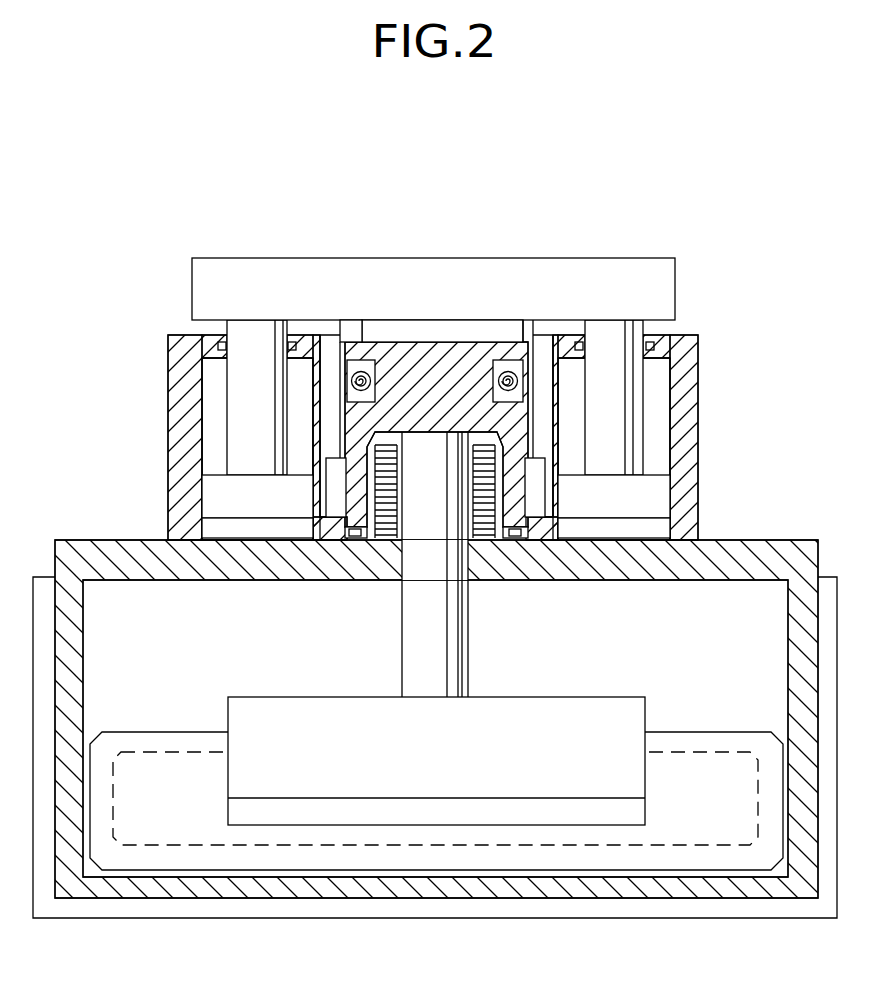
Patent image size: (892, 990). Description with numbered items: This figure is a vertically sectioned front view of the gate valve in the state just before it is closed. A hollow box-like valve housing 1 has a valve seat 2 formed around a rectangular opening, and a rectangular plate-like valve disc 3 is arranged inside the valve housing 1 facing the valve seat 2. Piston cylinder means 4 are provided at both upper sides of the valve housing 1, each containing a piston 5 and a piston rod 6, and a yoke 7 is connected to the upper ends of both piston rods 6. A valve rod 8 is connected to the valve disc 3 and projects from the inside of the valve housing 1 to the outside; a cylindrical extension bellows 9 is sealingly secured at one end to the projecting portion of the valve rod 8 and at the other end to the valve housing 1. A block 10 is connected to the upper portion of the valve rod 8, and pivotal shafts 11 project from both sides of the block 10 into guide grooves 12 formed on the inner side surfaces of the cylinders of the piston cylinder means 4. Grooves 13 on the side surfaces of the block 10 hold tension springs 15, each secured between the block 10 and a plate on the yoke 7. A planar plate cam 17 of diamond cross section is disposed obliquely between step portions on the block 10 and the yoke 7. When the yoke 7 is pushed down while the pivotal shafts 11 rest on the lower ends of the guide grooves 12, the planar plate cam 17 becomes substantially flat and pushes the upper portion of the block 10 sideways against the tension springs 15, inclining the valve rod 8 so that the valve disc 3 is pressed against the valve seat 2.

The valve housing 1 is at (787, 540).
The valve seat 2 is at (572, 835).
The valve disc 3 is at (677, 858).
The piston cylinder means 4 is at (662, 408).
The piston 5 is at (662, 487).
The piston rod 6 is at (682, 370).
The yoke 7 is at (653, 257).
The valve rod 8 is at (413, 640).
The extension bellows 9 is at (483, 540).
The block 10 is at (445, 385).
The pivotal shafts 11 is at (538, 517).
The guide grooves 12 is at (540, 343).
The grooves 13 is at (358, 323).
The tension springs 15 is at (508, 358).
The planar plate cam 17 is at (383, 327).